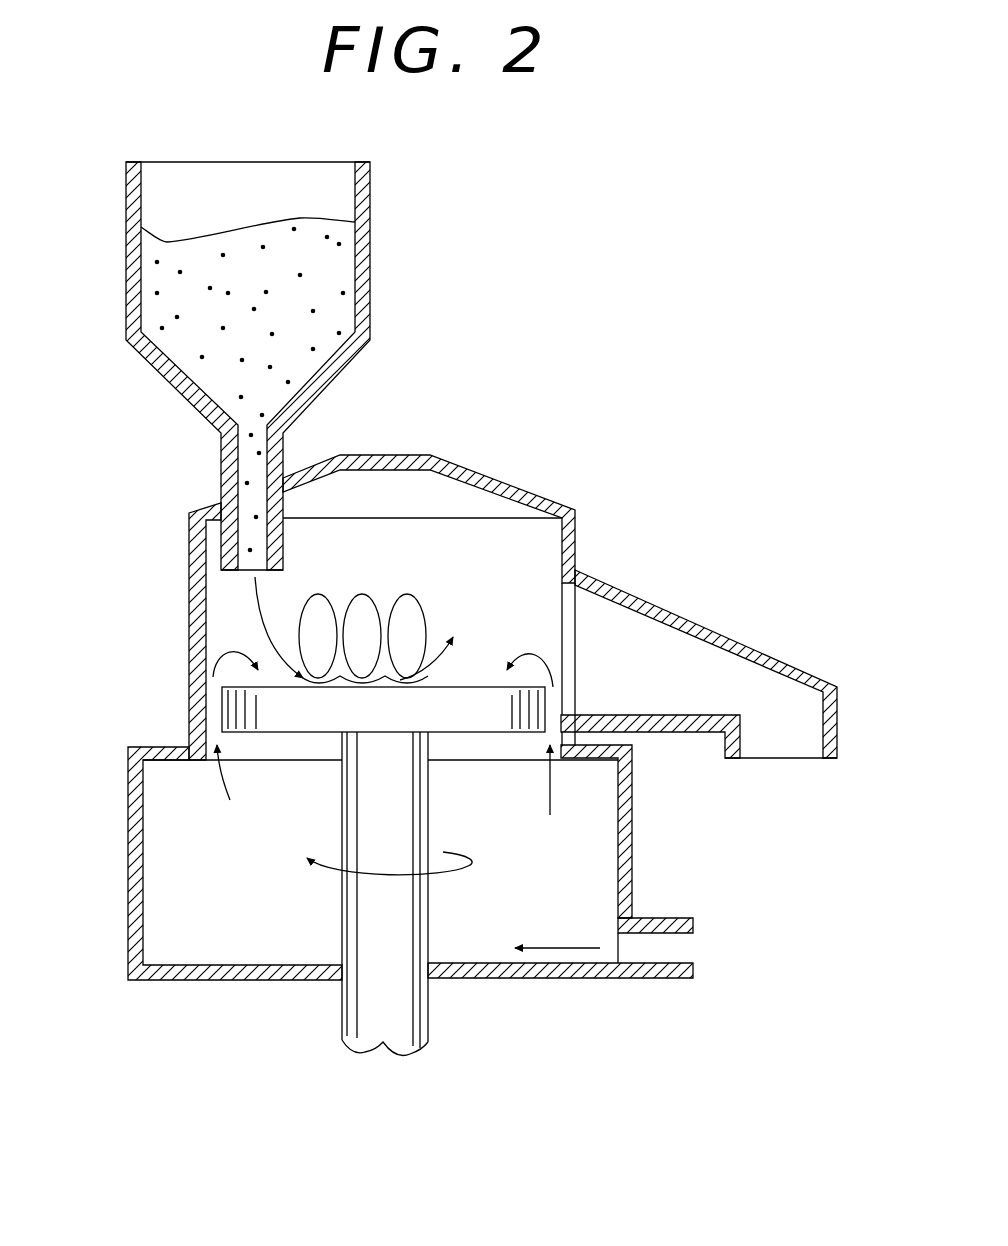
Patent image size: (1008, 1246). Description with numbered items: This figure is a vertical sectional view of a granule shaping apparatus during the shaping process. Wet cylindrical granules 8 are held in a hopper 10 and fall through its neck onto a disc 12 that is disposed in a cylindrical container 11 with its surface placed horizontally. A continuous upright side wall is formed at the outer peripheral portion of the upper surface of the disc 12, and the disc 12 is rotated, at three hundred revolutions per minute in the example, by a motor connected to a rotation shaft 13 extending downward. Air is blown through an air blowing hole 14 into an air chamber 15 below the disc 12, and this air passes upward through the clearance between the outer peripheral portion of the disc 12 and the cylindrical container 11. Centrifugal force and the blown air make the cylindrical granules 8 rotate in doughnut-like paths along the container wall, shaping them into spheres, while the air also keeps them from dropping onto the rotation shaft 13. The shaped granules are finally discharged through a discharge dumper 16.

The cylindrical granules 8 is at (337, 323).
The hopper 10 is at (370, 246).
The cylindrical container 11 is at (190, 632).
The disc 12 is at (292, 718).
The rotation shaft 13 is at (390, 923).
The air blowing hole 14 is at (708, 942).
The air chamber 15 is at (538, 893).
The discharge dumper 16 is at (778, 715).